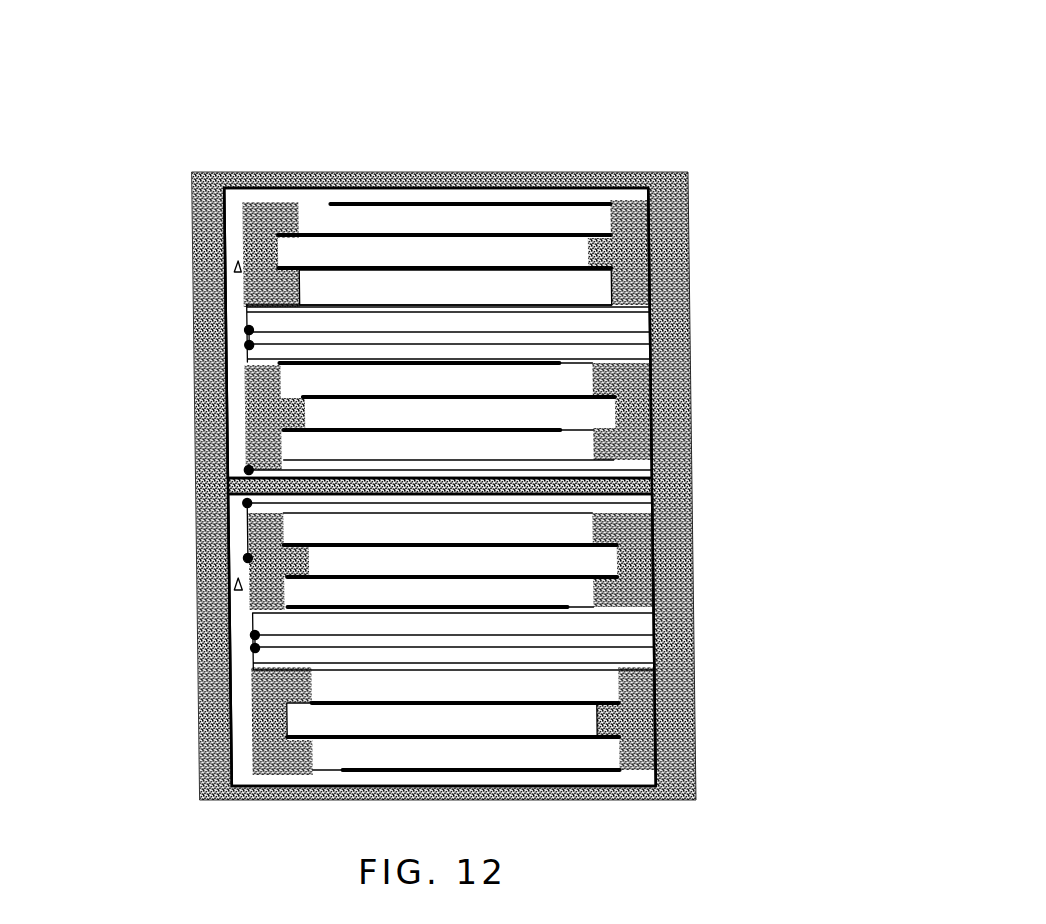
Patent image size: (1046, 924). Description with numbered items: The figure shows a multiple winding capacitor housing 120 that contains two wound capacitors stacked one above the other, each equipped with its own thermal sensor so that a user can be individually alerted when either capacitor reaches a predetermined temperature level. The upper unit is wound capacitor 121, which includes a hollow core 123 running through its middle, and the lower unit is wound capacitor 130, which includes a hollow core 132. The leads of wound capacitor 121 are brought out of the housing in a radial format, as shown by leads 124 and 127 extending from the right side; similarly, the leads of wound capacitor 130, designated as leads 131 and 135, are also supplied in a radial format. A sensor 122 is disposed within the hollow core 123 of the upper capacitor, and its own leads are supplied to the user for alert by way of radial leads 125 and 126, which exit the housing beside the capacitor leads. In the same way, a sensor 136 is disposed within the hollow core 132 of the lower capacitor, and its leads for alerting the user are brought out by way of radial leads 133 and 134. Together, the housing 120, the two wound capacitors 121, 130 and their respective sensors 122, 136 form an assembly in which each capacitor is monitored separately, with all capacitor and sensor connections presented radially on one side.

The multiple winding capacitor housing 120 is at (193, 172).
The wound capacitor 121 is at (223, 260).
The sensor 122 is at (445, 334).
The hollow core 123 is at (242, 320).
The lead 124 is at (688, 287).
The radial lead 125 is at (688, 331).
The radial lead 126 is at (688, 343).
The lead 127 is at (690, 469).
The wound capacitor 130 is at (232, 570).
The lead 131 is at (690, 503).
The hollow core 132 is at (253, 623).
The radial lead 133 is at (690, 635).
The radial lead 134 is at (690, 647).
The lead 135 is at (693, 737).
The sensor 136 is at (497, 635).